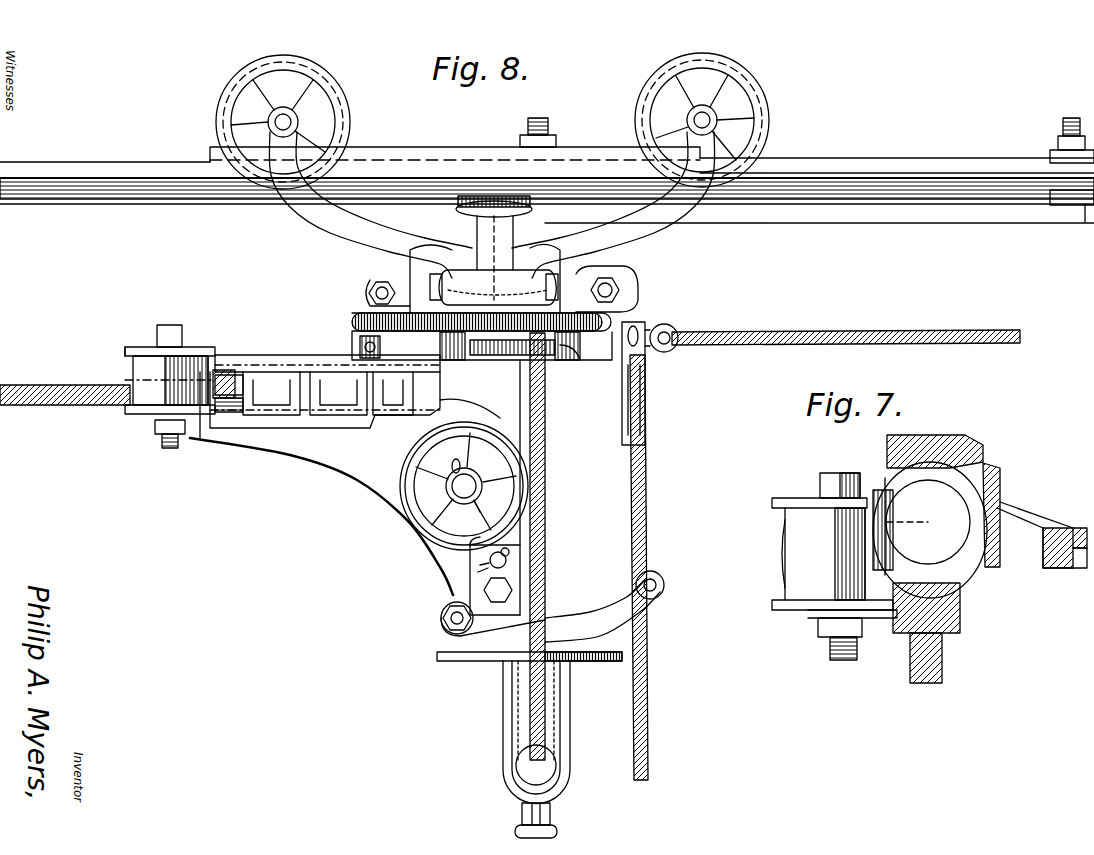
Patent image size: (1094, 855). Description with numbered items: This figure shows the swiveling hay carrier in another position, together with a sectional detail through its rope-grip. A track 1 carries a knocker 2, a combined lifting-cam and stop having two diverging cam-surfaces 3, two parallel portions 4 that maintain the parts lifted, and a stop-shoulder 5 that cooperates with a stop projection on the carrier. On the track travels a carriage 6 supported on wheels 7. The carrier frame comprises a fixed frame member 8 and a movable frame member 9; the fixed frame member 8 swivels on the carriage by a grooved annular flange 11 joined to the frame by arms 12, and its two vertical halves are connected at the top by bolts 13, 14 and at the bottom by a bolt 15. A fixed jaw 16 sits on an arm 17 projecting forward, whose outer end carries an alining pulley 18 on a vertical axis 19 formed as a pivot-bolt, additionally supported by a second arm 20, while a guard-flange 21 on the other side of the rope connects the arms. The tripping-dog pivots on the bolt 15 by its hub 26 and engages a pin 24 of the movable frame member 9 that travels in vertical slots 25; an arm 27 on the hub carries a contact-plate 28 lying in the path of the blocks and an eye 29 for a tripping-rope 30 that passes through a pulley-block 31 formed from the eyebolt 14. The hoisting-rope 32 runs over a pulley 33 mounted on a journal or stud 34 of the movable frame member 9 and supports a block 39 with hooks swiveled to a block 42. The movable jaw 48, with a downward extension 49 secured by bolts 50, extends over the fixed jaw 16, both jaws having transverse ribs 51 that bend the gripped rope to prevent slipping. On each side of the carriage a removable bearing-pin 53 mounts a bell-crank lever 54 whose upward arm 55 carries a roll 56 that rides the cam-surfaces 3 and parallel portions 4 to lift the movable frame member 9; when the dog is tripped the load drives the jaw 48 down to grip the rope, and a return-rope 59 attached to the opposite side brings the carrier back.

In FIG. 8, the track 1 is at (152, 172).
In FIG. 8, the knocker 2 is at (858, 223).
In FIG. 8, the cam-surfaces 3 is at (1060, 215).
In FIG. 8, the parallel portions 4 is at (676, 223).
In FIG. 8, the stop-shoulder 5 is at (1085, 215).
In FIG. 8, the carriage 6 is at (597, 147).
In FIG. 8, the wheels 7 is at (330, 98).
In FIG. 8, the fixed frame member 8 is at (448, 576).
In FIG. 8, the movable frame member 9 is at (525, 356).
In FIG. 8, the grooved annular flange 11 is at (378, 312).
In FIG. 8, the arms 12 is at (572, 350).
In FIG. 8, the bolt 13 is at (352, 336).
In FIG. 8, the bolt 14 is at (662, 324).
In FIG. 8, the bolt 15 is at (443, 621).
In FIG. 8, the fixed jaw 16 is at (300, 410).
In FIG. 7, the fixed jaw 16 is at (958, 614).
In FIG. 8, the arm 17 is at (318, 448).
In FIG. 7, the arm 17 is at (938, 668).
In FIG. 8, the alining or guiding pulley 18 is at (130, 370).
In FIG. 7, the alining or guiding pulley 18 is at (785, 532).
In FIG. 8, the vertical axis 19 is at (173, 330).
In FIG. 7, the vertical axis 19 is at (825, 472).
In FIG. 8, the second arm 20 is at (146, 346).
In FIG. 7, the second arm 20 is at (805, 496).
In FIG. 8, the guard-flange 21 is at (224, 368).
In FIG. 7, the guard-flange 21 is at (958, 528).
In FIG. 8, the pin 24 is at (508, 556).
In FIG. 8, the vertical slots 25 is at (497, 620).
In FIG. 8, the hub 26 is at (441, 612).
In FIG. 8, the arm 27 is at (565, 630).
In FIG. 8, the contact-plate 28 is at (614, 661).
In FIG. 8, the eye 29 is at (664, 586).
In FIG. 8, the tripping-rope 30 is at (650, 462).
In FIG. 8, the pulley-block 31 is at (622, 395).
In FIG. 8, the hoisting-rope 32 is at (88, 395).
In FIG. 8, the pulley 33 is at (408, 508).
In FIG. 8, the journal or stud 34 is at (472, 488).
In FIG. 8, the block 39 is at (504, 782).
In FIG. 8, the block 42 is at (552, 824).
In FIG. 8, the movable jaw 48 is at (270, 362).
In FIG. 7, the movable jaw 48 is at (942, 436).
In FIG. 8, the downward extension 49 is at (430, 428).
In FIG. 7, the downward extension 49 is at (1000, 550).
In FIG. 8, the bolts 50 is at (497, 412).
In FIG. 8, the transverse ribs 51 is at (240, 375).
In FIG. 7, the transverse ribs 51 is at (875, 478).
In FIG. 8, the bearing-pin 53 is at (598, 282).
In FIG. 8, the bell-crank lever 54 is at (512, 265).
In FIG. 8, the arm 55 is at (480, 218).
In FIG. 8, the roll 56 is at (430, 205).
In FIG. 8, the return-rope 59 is at (815, 333).